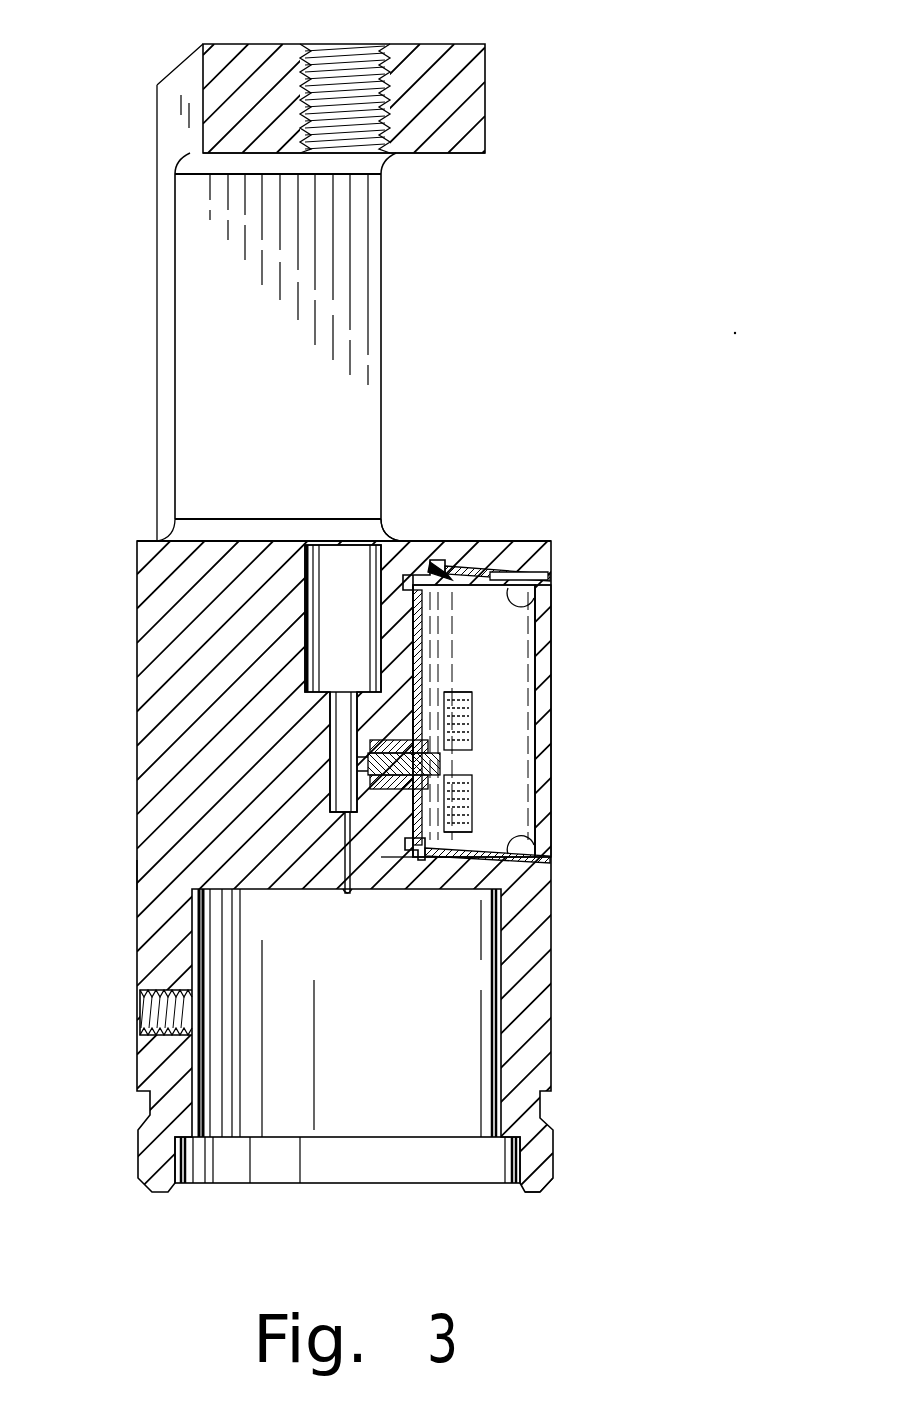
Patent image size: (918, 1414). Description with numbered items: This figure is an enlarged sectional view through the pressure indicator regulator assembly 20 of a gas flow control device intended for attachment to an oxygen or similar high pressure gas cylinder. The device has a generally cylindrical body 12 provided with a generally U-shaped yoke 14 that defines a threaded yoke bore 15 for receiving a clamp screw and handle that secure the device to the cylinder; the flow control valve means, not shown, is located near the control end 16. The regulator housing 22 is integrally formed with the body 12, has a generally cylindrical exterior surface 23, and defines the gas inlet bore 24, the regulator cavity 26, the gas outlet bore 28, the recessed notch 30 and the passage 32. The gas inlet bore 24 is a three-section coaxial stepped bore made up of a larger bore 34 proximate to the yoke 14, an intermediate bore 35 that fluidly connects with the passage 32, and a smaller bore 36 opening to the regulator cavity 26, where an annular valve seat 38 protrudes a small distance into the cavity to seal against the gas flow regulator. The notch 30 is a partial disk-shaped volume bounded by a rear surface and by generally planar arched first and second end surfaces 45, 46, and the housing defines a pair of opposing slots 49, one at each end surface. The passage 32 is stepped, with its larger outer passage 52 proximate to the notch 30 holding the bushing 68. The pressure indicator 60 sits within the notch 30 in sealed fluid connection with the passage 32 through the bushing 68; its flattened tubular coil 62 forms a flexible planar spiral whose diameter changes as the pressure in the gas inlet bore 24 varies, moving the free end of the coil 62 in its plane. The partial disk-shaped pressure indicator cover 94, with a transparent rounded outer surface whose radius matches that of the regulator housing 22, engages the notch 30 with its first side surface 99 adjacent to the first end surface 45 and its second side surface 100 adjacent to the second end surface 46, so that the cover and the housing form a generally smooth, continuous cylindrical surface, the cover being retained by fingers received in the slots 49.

The body 12 is at (137, 541).
The yoke 14 is at (172, 137).
The threaded yoke bore 15 is at (340, 78).
The control end 16 is at (540, 1185).
The pressure indicator regulator assembly 20 is at (567, 644).
The regulator housing 22 is at (165, 740).
The exterior surface 23 is at (137, 878).
The gas inlet bore 24 is at (410, 538).
The regulator cavity 26 is at (440, 1160).
The gas outlet bore 28 is at (140, 1012).
The recessed notch 30 is at (548, 578).
The passage 32 is at (330, 855).
The larger bore 34 is at (355, 562).
The intermediate bore 35 is at (345, 705).
The smaller bore 36 is at (343, 885).
The annular valve seat 38 is at (352, 895).
The first end surface 45 is at (535, 862).
The second end surface 46 is at (500, 568).
The slots 49 is at (438, 565).
The outer passage 52 is at (398, 795).
The pressure indicator 60 is at (480, 698).
The tubular coil 62 is at (473, 718).
The bushing 68 is at (420, 682).
The pressure indicator cover 94 is at (545, 772).
The first side surface 99 is at (532, 842).
The second side surface 100 is at (530, 600).